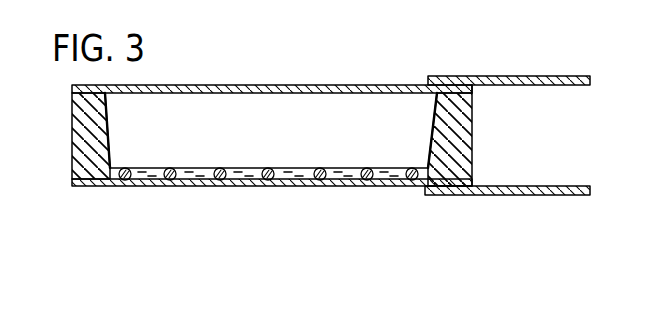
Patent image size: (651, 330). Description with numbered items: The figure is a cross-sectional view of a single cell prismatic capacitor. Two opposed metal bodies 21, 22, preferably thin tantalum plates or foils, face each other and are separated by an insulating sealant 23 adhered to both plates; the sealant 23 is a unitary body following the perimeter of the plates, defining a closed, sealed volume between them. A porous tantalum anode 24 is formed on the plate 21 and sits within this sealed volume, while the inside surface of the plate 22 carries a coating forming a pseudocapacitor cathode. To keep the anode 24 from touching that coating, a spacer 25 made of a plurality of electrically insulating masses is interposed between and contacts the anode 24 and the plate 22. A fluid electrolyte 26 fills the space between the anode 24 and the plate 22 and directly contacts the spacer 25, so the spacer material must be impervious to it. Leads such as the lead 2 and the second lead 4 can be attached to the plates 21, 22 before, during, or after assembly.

The lead 2 is at (538, 195).
The second lead 4 is at (525, 77).
The metal body 21 is at (371, 85).
The metal body 22 is at (393, 188).
The insulating sealant 23 is at (468, 137).
The porous tantalum anode 24 is at (238, 110).
The spacer 25 is at (167, 188).
The fluid electrolyte 26 is at (290, 188).